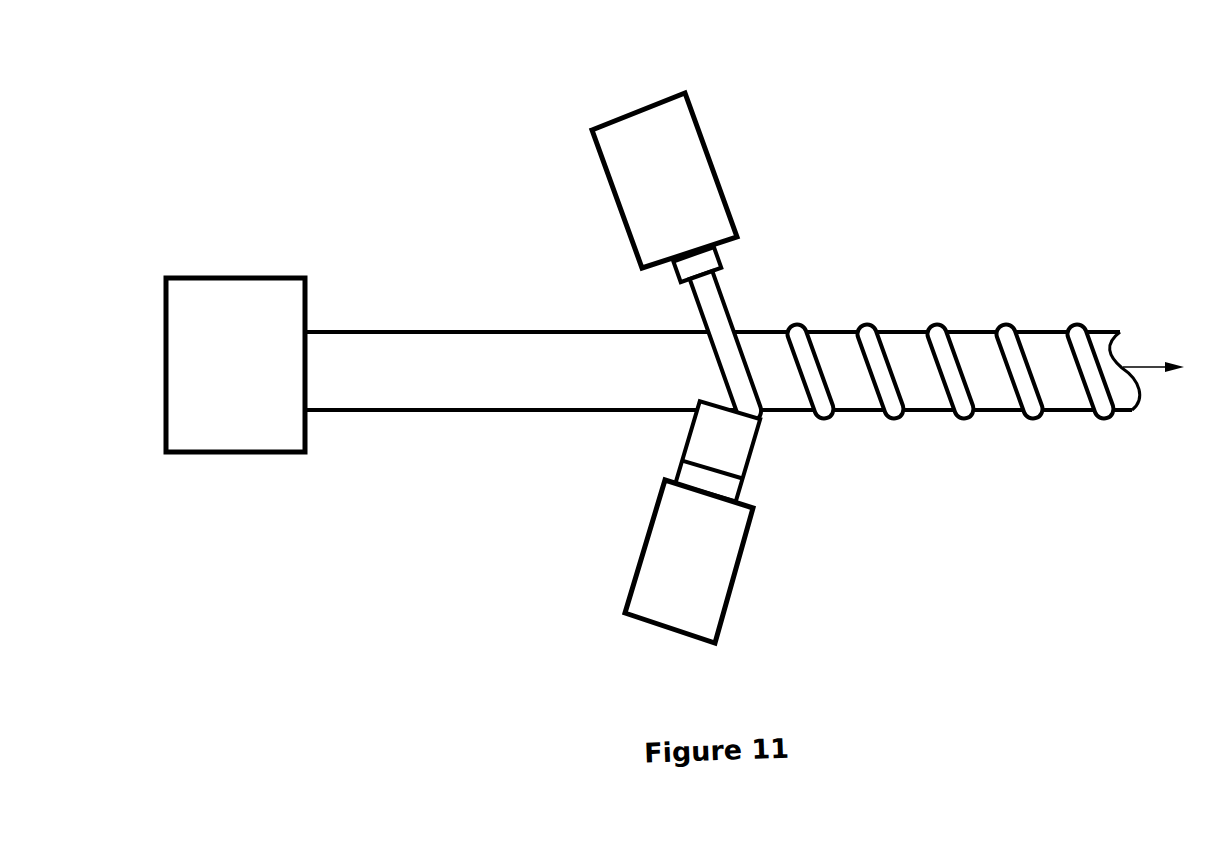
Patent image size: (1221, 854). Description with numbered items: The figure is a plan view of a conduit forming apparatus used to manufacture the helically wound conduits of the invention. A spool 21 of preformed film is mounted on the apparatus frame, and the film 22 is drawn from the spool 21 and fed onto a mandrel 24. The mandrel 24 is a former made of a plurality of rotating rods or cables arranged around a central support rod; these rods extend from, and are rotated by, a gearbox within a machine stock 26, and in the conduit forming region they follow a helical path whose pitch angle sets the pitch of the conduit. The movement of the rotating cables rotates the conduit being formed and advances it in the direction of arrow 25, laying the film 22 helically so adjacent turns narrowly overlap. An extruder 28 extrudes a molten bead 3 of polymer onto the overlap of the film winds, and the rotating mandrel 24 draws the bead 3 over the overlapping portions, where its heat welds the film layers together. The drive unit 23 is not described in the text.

The spool 21 is at (707, 545).
The film 22 is at (723, 450).
The drive motor 23 is at (237, 360).
The mandrel 24 is at (356, 330).
The arrow 25 is at (1153, 349).
The machine stock 26 is at (832, 343).
The extruder 28 is at (652, 147).
The bead 3 is at (738, 367).